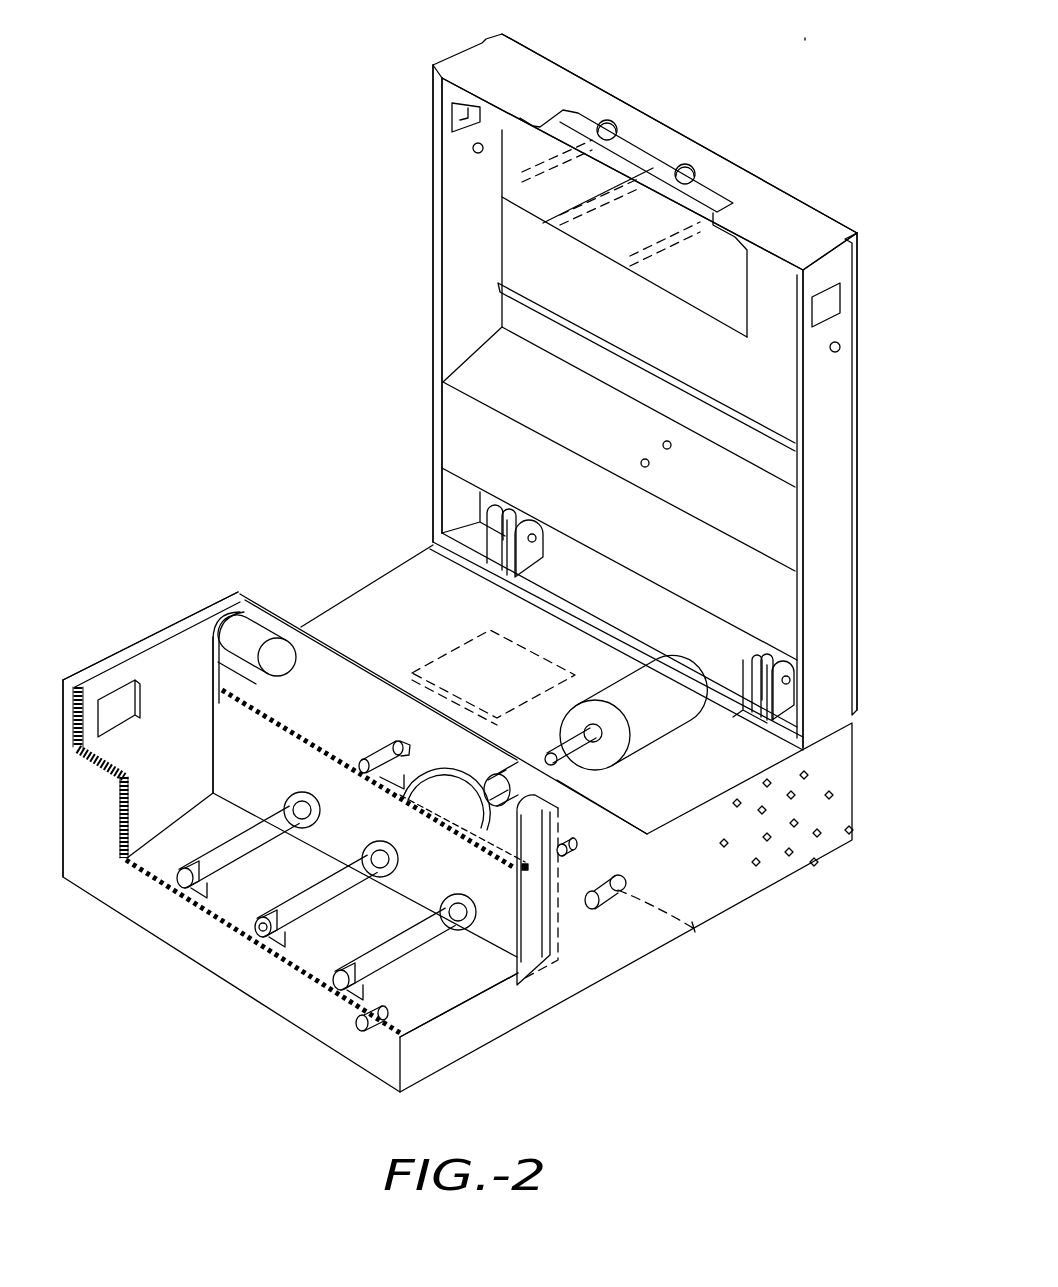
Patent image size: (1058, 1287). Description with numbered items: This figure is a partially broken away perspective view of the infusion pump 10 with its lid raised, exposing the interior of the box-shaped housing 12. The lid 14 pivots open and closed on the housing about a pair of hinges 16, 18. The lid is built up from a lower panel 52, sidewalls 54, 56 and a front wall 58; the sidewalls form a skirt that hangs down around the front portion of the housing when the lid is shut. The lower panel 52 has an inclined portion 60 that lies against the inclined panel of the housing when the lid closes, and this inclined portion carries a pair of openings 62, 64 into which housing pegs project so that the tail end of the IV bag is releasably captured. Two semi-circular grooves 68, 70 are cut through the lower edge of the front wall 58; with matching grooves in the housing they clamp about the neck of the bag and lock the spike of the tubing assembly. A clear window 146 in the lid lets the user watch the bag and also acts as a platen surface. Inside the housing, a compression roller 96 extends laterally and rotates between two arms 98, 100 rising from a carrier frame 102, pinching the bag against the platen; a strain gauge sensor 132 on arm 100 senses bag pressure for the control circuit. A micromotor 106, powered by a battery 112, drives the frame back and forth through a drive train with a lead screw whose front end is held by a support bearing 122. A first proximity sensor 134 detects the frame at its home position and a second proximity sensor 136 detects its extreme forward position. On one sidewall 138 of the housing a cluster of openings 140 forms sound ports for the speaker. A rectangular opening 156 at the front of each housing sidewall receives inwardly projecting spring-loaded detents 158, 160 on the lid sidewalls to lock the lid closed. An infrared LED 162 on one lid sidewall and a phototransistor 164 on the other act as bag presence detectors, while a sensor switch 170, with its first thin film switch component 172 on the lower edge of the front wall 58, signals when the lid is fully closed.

The infusion pump 10 is at (742, 60).
The housing 12 is at (858, 748).
The lid 14 is at (862, 425).
The hinge 16 is at (537, 538).
The hinge 18 is at (745, 650).
The lower panel 52 is at (463, 428).
The sidewall 54 is at (437, 265).
The sidewall 56 is at (827, 535).
The front wall 58 is at (792, 208).
The inclined portion 60 is at (497, 365).
The opening 62 is at (672, 446).
The opening 64 is at (650, 464).
The semi-circular groove 68 is at (607, 119).
The semi-circular groove 70 is at (685, 163).
The compression roller 96 is at (258, 630).
The arm 98 is at (214, 667).
The arm 100 is at (528, 842).
The carrier frame 102 is at (233, 753).
The motor 106 is at (657, 737).
The battery 112 is at (480, 627).
The support bearing 122 is at (250, 920).
The strain gauge sensor 132 is at (558, 897).
The first proximity sensor 134 is at (696, 929).
The second proximity sensor 136 is at (385, 1040).
The sidewall 138 is at (547, 983).
The openings 140 is at (818, 834).
The window 146 is at (608, 220).
The rectangular opening 156 is at (138, 708).
The detent 158 is at (468, 116).
The detent 160 is at (826, 303).
The LED 162 is at (474, 152).
The phototransistor 164 is at (836, 355).
The sensor switch 170 is at (760, 230).
The first thin film switch component 172 is at (737, 233).